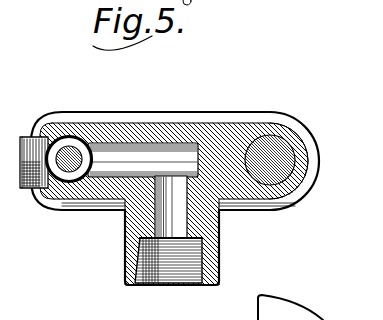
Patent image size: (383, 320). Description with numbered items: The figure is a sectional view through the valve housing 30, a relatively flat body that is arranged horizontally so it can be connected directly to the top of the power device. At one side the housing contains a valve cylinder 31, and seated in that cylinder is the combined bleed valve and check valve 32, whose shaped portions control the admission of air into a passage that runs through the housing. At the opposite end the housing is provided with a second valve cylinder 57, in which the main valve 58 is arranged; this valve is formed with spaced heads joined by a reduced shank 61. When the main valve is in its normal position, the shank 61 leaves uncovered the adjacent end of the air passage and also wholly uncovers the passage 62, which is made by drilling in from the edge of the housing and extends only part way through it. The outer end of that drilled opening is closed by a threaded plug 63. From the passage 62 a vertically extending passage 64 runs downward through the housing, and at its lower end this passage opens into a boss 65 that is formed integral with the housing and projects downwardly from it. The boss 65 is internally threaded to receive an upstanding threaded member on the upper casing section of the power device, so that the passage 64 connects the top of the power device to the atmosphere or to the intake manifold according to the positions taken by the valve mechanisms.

The valve housing 30 is at (100, 125).
The valve cylinder 31 is at (299, 152).
The combined bleed valve and check valve 32 is at (287, 161).
The valve cylinder 57 is at (80, 181).
The main valve 58 is at (76, 146).
The reduced shank 61 is at (68, 172).
The passage 62 is at (139, 163).
The threaded plug 63 is at (33, 147).
The vertically extending passage 64 is at (178, 186).
The boss 65 is at (222, 239).